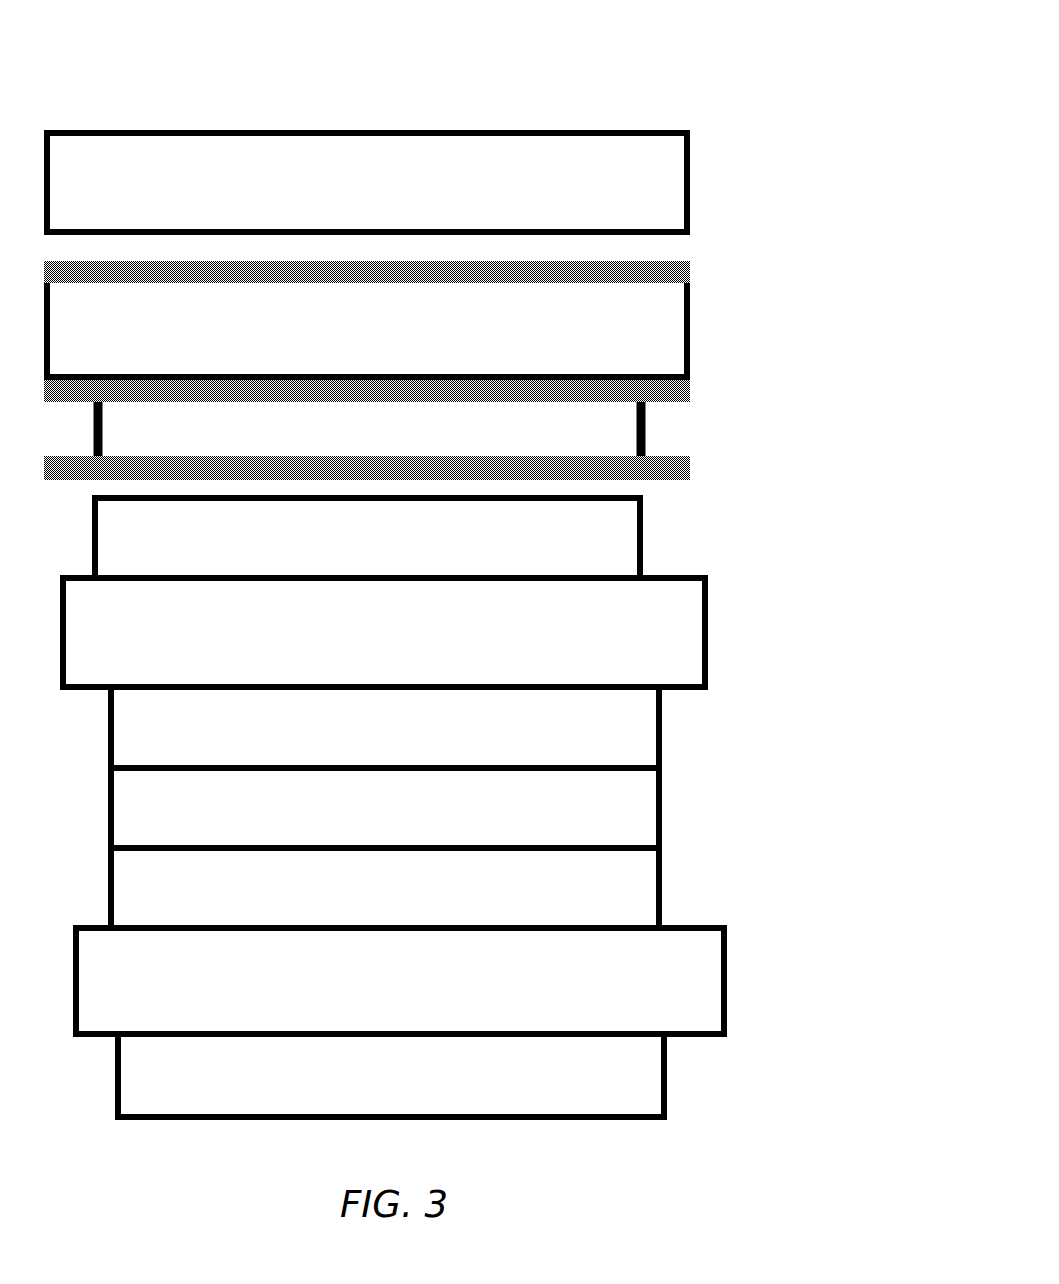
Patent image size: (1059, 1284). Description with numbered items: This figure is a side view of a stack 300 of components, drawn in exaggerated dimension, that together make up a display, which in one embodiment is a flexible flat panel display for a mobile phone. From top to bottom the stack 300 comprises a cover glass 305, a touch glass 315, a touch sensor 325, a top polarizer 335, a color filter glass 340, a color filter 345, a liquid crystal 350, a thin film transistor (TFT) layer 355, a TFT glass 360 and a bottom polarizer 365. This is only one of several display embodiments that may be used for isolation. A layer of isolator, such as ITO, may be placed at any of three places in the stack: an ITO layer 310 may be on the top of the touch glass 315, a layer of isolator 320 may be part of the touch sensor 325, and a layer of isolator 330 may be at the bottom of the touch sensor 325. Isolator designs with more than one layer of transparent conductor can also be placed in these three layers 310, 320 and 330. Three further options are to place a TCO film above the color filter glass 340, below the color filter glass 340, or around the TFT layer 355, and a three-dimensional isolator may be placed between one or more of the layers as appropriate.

The stack 300 is at (707, 70).
The cover glass 305 is at (690, 145).
The ITO layer 310 is at (689, 265).
The touch glass 315 is at (690, 325).
The layer of isolator 320 is at (690, 378).
The touch sensor 325 is at (645, 445).
The layer of isolator 330 is at (690, 468).
The top polarizer 335 is at (644, 542).
The color filter glass 340 is at (708, 610).
The color filter glass 345 is at (662, 722).
The liquid crystal 350 is at (662, 795).
The thin film transistor (TFT) layer 355 is at (662, 882).
The TFT glass 360 is at (727, 965).
The bottom polarizer 365 is at (667, 1075).